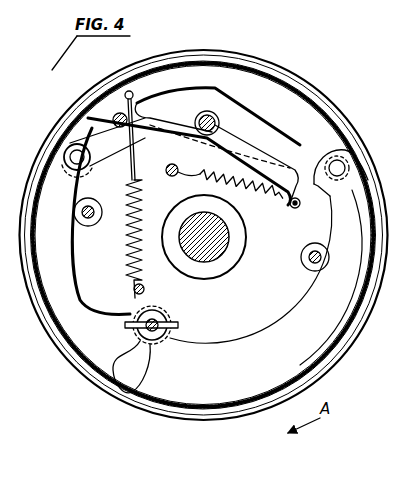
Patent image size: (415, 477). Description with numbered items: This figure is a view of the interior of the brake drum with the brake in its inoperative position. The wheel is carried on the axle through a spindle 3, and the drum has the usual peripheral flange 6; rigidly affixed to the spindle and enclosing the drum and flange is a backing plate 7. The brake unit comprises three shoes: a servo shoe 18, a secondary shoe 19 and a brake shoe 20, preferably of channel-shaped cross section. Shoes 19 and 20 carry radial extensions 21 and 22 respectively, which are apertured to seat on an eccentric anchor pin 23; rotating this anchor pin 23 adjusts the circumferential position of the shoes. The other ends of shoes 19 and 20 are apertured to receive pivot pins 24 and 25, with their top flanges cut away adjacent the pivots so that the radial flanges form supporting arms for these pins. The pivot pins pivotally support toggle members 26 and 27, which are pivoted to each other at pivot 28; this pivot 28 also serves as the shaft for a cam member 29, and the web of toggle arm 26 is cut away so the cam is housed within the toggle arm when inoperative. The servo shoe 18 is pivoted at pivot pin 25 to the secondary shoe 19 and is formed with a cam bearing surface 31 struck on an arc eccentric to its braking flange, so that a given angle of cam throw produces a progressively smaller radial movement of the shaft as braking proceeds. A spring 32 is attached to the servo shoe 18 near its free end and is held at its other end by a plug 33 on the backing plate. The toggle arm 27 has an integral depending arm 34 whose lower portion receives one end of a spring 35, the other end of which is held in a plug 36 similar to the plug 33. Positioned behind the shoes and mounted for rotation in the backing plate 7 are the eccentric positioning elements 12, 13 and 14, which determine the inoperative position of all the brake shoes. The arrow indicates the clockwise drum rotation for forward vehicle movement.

The spindle 3 is at (214, 253).
The peripheral flange 6 is at (270, 69).
The backing plate 7 is at (276, 128).
The eccentric brake positioning element 12 is at (116, 112).
The eccentric brake positioning element 13 is at (313, 267).
The eccentric brake positioning element 14 is at (91, 208).
The servo shoe 18 is at (298, 113).
The secondary shoe 19 is at (325, 333).
The brake shoe 20 is at (85, 337).
The radial extension 21 is at (200, 344).
The radial extension 22 is at (120, 335).
The eccentric anchor pin 23 is at (158, 316).
The pivot pin 24 is at (72, 152).
The pivot pin 25 is at (345, 163).
The toggle member 26 is at (167, 140).
The toggle member 27 is at (285, 148).
The pivot 28 is at (208, 111).
The cam member 29 is at (190, 108).
The cam bearing surface 31 is at (150, 100).
The spring 32 is at (128, 236).
The plug 33 is at (134, 289).
The depending arm 34 is at (250, 183).
The spring 35 is at (280, 199).
The plug 36 is at (172, 177).